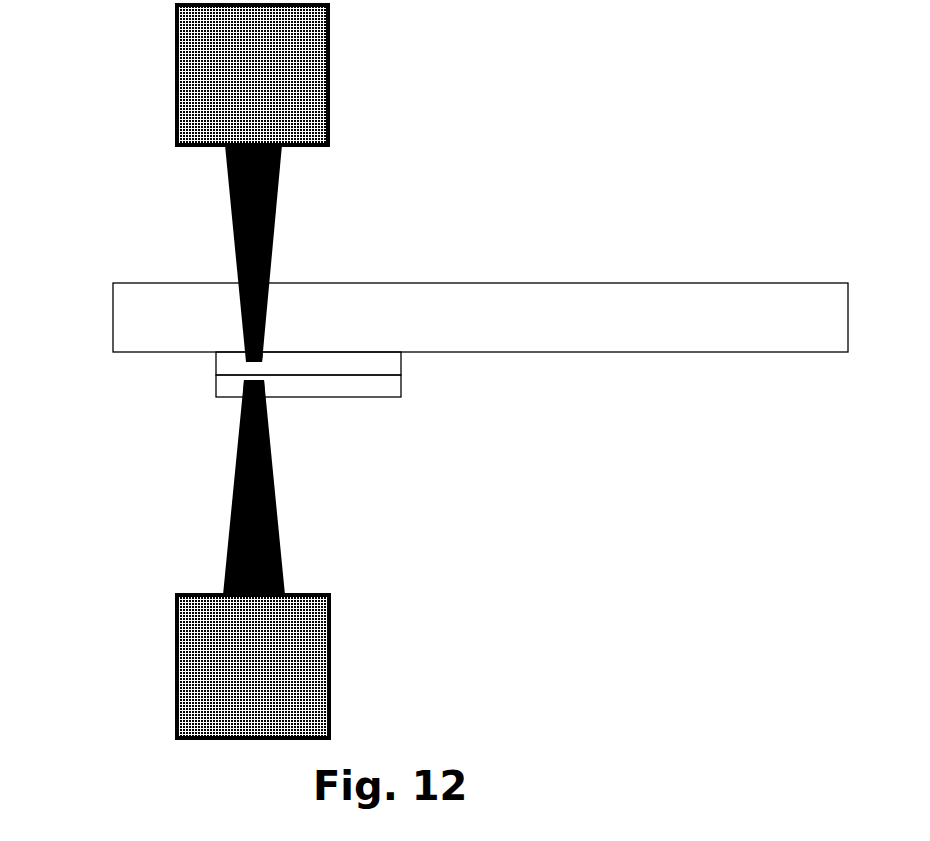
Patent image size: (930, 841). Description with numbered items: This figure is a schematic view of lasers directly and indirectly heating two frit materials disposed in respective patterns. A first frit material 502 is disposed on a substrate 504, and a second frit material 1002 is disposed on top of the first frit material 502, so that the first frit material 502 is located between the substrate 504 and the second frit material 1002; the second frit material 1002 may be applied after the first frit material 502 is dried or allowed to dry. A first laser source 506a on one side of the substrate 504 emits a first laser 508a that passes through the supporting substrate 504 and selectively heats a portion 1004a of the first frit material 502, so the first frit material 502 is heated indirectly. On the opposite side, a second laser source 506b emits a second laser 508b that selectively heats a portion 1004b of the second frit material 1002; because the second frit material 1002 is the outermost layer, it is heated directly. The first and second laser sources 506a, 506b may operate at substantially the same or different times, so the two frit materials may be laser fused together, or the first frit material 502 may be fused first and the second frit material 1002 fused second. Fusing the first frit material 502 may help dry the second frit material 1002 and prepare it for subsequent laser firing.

The first frit material 502 is at (338, 362).
The substrate 504 is at (113, 318).
The first laser source 506a is at (330, 75).
The second laser source 506b is at (330, 665).
The first laser 508a is at (277, 217).
The second laser 508b is at (272, 465).
The second frit material 1002 is at (377, 380).
The portion of the first frit material 1004a is at (248, 345).
The portion of the second frit material 1004b is at (245, 398).